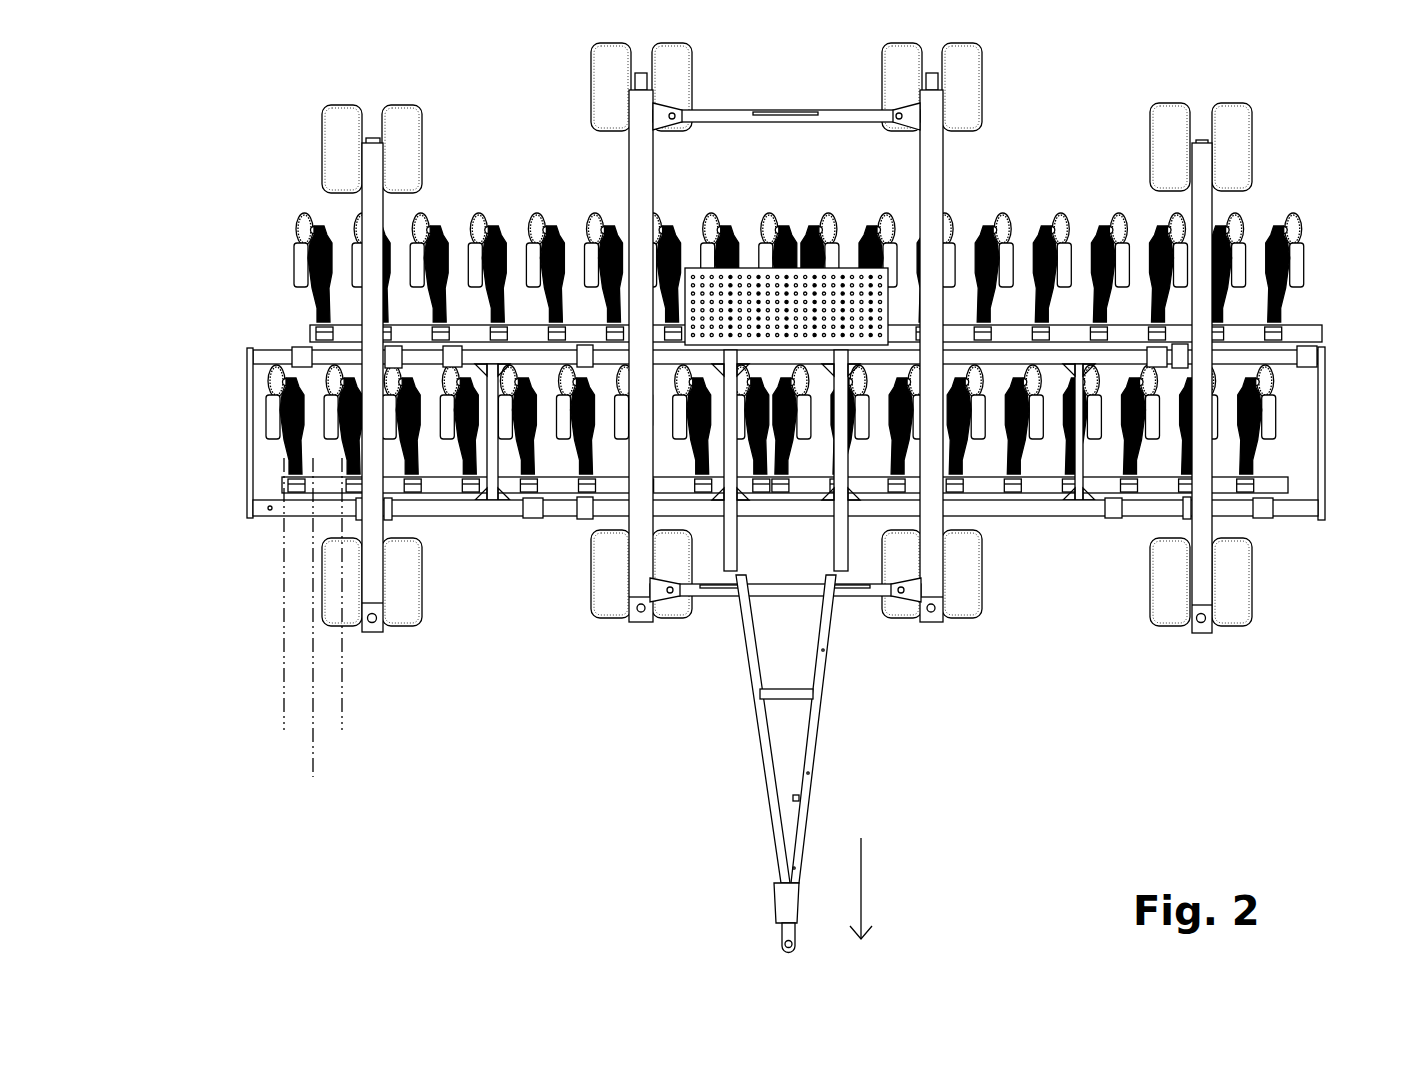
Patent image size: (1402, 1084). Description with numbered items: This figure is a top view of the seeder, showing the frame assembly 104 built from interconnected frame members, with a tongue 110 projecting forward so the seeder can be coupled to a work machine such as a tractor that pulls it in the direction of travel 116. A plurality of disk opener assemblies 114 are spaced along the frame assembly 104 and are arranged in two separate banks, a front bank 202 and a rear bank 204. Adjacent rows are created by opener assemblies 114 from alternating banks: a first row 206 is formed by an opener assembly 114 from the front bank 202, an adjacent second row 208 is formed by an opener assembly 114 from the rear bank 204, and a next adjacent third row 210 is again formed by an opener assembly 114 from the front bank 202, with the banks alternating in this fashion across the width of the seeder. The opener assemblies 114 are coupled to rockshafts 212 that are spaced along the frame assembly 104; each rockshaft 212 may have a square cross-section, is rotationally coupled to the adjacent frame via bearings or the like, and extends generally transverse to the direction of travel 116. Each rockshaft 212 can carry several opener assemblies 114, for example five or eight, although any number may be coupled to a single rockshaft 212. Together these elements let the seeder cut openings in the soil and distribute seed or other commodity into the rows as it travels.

The frame assembly 104 is at (238, 531).
The tongue 110 is at (735, 912).
The disk opener assembly 114 is at (1311, 197).
The direction of travel 116 is at (861, 892).
The front bank 202 is at (224, 380).
The rear bank 204 is at (272, 245).
The first row 206 is at (284, 676).
The second row 208 is at (313, 756).
The third row 210 is at (343, 672).
The rockshaft 212 is at (521, 332).